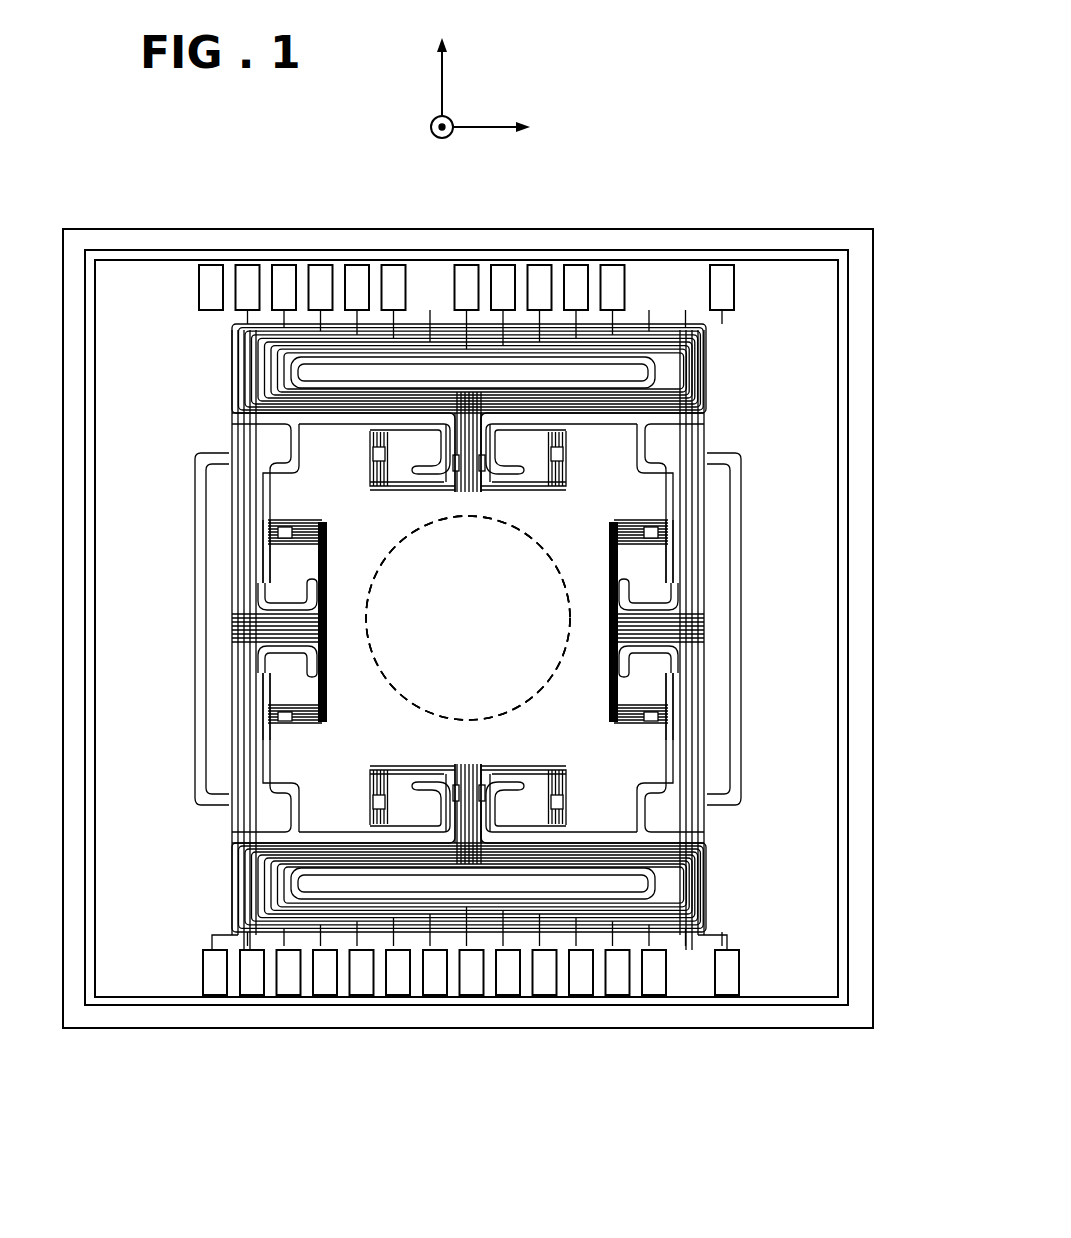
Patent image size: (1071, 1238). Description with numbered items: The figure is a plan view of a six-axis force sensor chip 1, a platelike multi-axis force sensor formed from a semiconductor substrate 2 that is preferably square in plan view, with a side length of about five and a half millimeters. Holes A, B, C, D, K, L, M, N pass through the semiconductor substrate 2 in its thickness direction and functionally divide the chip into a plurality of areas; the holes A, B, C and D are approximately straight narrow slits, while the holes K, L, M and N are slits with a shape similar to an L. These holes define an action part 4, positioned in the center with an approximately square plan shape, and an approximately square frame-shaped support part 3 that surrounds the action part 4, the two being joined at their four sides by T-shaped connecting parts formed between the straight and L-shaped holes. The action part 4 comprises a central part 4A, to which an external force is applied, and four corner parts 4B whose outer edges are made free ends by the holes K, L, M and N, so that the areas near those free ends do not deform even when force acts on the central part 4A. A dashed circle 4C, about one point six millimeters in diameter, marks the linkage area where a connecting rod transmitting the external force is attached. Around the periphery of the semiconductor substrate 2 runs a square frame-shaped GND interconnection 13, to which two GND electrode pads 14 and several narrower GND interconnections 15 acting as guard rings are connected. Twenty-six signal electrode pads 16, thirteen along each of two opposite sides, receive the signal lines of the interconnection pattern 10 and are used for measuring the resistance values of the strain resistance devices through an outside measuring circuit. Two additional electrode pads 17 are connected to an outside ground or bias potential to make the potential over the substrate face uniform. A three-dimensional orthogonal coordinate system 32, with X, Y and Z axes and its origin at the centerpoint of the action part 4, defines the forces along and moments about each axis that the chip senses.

The six-axis force sensor chip 1 is at (764, 212).
The semiconductor substrate 2 is at (874, 290).
The support part 3 is at (815, 410).
The action part 4 is at (480, 632).
The central part 4A is at (540, 580).
The corner parts 4B is at (273, 470).
The circle 4C is at (545, 695).
The interconnection pattern 10 is at (716, 366).
The GND interconnection 13 is at (849, 348).
The GND electrode pads 14 is at (212, 280).
The GND interconnections 15 is at (471, 978).
The signal electrode pads 16 is at (393, 282).
The additional electrode pads 17 is at (721, 280).
The three-dimensional orthogonal coordinate system 32 is at (473, 105).
The hole A is at (452, 380).
The hole B is at (718, 608).
The hole C is at (453, 884).
The hole D is at (222, 608).
The hole K is at (292, 440).
The hole L is at (640, 440).
The hole M is at (640, 818).
The hole N is at (297, 818).